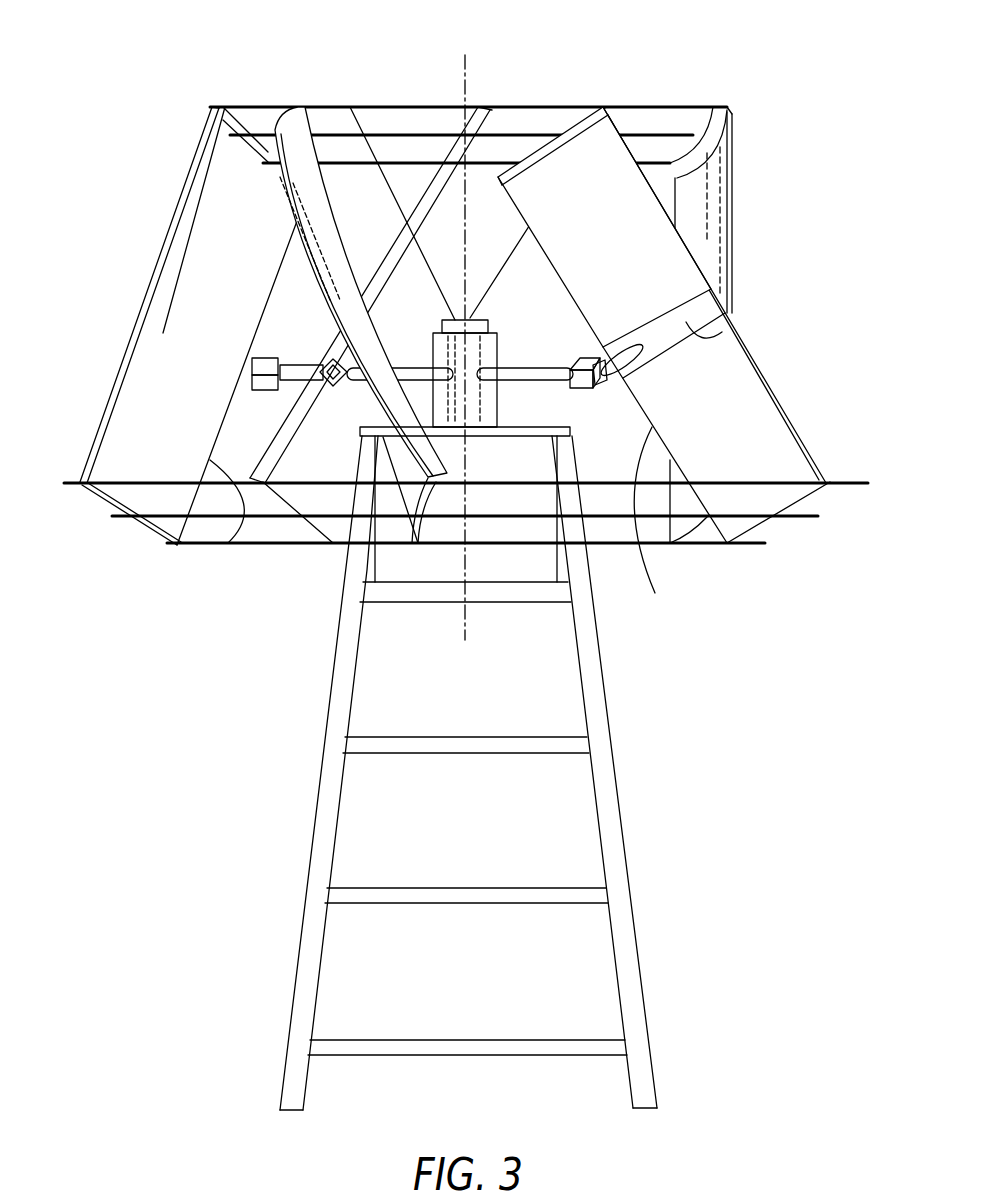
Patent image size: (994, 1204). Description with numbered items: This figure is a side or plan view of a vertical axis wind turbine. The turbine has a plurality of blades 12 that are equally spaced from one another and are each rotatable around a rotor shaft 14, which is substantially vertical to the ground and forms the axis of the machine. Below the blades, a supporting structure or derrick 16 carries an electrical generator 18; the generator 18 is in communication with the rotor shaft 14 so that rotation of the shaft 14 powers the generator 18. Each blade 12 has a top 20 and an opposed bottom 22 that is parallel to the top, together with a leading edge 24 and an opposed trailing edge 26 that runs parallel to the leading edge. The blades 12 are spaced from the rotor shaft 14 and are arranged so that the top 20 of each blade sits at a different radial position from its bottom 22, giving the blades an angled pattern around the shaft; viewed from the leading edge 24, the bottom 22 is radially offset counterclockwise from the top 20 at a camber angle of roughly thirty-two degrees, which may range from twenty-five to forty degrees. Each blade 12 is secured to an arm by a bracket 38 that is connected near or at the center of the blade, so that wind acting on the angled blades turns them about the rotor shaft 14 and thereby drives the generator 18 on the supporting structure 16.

The blade 12 is at (233, 200).
The rotor shaft 14 is at (350, 107).
The supporting structure 16 is at (322, 843).
The electrical generator 18 is at (408, 563).
The top 20 is at (572, 130).
The bottom 22 is at (800, 500).
The leading edge 24 is at (228, 543).
The trailing edge 26 is at (125, 347).
The bracket 38 is at (709, 316).